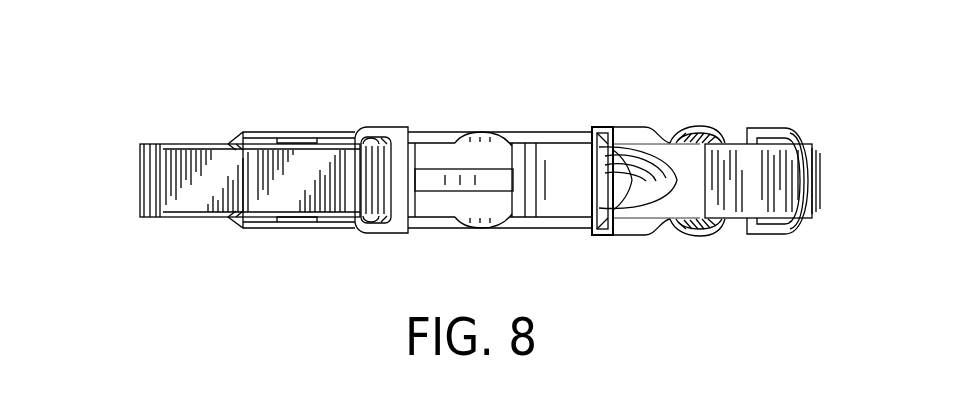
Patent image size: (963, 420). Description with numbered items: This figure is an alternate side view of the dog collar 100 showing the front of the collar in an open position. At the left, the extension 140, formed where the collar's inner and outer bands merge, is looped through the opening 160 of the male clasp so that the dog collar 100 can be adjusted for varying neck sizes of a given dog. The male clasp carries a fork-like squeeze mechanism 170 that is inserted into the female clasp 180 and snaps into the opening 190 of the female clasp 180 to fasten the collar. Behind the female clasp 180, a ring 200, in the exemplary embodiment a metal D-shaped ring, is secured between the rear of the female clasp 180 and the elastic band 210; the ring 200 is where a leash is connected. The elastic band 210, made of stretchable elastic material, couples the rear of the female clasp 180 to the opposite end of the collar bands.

The dog collar 100 is at (165, 256).
The extension 140 is at (172, 144).
The opening 160 is at (355, 142).
The fork-like squeeze mechanism 170 is at (467, 135).
The female clasp 180 is at (632, 222).
The opening 190 is at (680, 135).
The ring 200 is at (773, 130).
The elastic band 210 is at (737, 222).